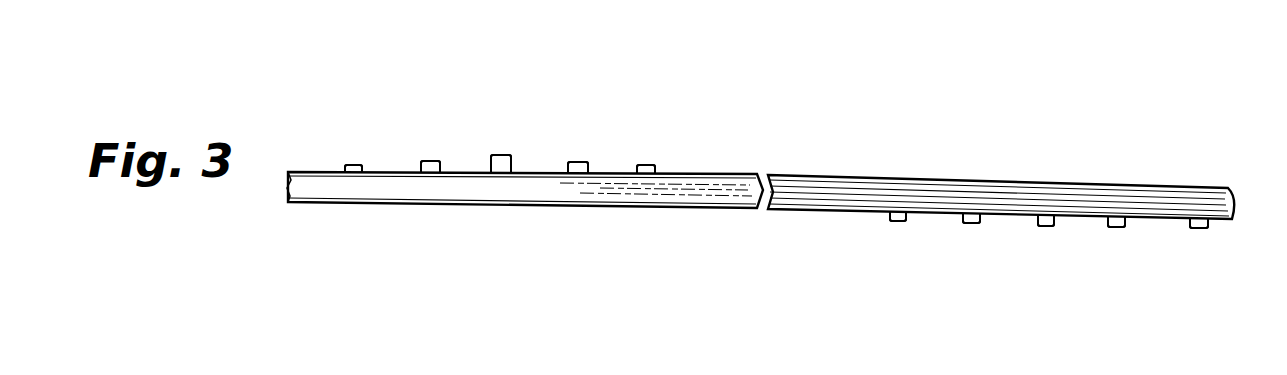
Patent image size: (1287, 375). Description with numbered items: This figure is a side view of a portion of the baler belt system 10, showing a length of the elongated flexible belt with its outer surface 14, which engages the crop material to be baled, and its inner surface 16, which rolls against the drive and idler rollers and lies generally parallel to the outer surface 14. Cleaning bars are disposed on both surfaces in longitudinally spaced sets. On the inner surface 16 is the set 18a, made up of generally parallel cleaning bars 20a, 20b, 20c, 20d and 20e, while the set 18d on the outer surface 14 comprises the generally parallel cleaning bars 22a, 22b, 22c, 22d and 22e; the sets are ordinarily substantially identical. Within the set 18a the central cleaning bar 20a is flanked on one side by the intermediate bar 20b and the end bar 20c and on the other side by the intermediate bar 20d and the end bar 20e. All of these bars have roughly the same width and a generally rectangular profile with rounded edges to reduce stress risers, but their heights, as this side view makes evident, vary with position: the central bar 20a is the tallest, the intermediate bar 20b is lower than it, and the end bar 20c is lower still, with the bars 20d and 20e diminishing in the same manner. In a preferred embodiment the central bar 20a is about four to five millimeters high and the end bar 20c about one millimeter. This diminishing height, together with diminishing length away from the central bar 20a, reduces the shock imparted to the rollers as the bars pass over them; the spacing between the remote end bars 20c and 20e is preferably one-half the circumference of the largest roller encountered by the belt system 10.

The baler belt system 10 is at (760, 177).
The outer surface 14 is at (848, 176).
The inner surface 16 is at (820, 210).
The set of cleaning bars 18a is at (456, 122).
The set of cleaning bars 18d is at (1007, 226).
The central cleaning bar 20a is at (503, 155).
The intermediate cleaning bar 20b is at (425, 160).
The end cleaning bar 20c is at (350, 164).
The intermediate cleaning bar 20d is at (578, 161).
The end cleaning bar 20e is at (644, 164).
The cleaning bar 22a is at (1047, 228).
The cleaning bar 22b is at (968, 224).
The cleaning bar 22c is at (895, 222).
The cleaning bar 22d is at (1118, 229).
The cleaning bar 22e is at (1200, 230).